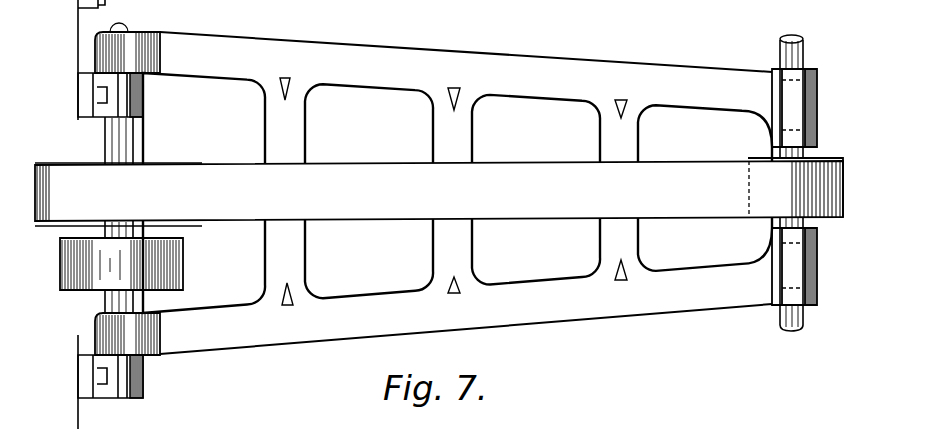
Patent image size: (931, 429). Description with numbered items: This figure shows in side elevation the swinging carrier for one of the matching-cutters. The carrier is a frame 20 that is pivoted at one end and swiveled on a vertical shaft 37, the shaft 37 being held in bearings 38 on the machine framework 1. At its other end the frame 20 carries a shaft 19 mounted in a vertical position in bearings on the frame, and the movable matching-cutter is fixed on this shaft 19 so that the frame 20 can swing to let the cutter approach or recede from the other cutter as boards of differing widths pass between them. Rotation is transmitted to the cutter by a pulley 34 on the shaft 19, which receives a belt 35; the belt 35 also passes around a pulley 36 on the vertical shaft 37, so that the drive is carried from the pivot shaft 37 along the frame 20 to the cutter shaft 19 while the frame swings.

The framework 1 is at (76, 60).
The shaft 19 is at (776, 45).
The frame 20 is at (450, 57).
The pulley 34 is at (834, 158).
The belt 35 is at (358, 166).
The pulley 36 is at (161, 162).
The vertical shaft 37 is at (104, 135).
The bearings 38 is at (146, 98).